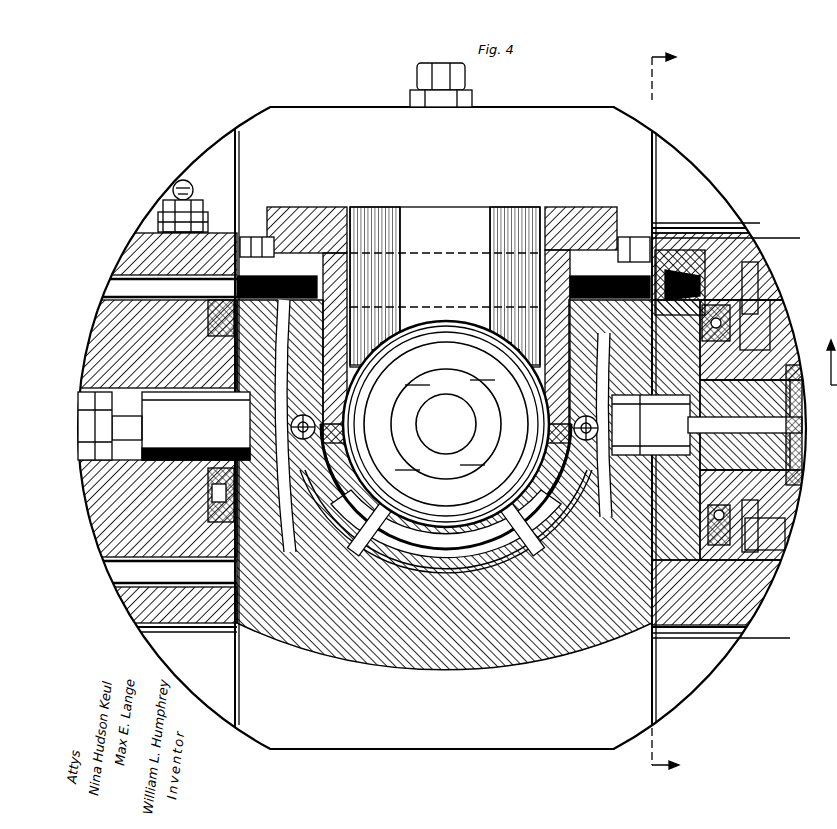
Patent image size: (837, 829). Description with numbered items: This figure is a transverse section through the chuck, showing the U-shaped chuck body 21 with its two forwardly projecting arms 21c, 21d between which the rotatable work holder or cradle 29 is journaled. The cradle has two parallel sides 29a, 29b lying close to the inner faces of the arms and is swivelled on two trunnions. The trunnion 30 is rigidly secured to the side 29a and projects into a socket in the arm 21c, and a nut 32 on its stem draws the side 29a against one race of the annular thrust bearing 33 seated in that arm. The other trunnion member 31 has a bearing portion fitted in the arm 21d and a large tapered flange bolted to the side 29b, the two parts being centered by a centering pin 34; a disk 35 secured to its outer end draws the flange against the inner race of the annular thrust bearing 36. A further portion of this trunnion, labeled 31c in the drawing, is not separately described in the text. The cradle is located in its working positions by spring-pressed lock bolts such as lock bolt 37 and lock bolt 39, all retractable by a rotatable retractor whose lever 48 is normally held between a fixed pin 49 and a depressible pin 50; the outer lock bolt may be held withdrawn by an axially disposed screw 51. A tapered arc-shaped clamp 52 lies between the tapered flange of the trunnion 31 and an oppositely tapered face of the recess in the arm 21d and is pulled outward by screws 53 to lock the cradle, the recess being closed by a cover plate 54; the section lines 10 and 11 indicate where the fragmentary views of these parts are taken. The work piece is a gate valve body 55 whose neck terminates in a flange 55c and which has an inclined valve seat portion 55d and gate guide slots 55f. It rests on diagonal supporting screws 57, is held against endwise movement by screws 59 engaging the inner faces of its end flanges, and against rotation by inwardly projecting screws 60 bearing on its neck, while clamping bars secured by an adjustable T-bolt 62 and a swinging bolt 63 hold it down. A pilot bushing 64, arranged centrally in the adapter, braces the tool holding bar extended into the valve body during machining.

The section line 10— 10 is at (678, 404).
The section line 11— 11 is at (825, 362).
The chuck body 21 is at (510, 735).
The arm of the chuck body 21c is at (112, 328).
The arm of the chuck body 21d is at (740, 600).
The work holder or cradle 29 is at (385, 672).
The side of the cradle 29a is at (270, 340).
The side of the cradle 29b is at (595, 340).
The trunnion 30 is at (181, 426).
The trunnion member 31 is at (740, 470).
The adjusting member portion 31c is at (770, 335).
The nut 32 is at (95, 400).
The annular thrust bearing 33 is at (232, 525).
The centering pin 34 is at (651, 425).
The disk 35 is at (800, 470).
The annular thrust bearing 36 is at (735, 318).
The lock bolt 37 is at (703, 522).
The lock bolt 39 is at (790, 538).
The lever 48 is at (183, 180).
The fixed pin 49 is at (205, 212).
The spring actuated or depressible pin 50 is at (160, 218).
The axially disposed screw 51 is at (824, 468).
The tapered arc-shaped clamp 52 is at (720, 230).
The screws 53 is at (770, 243).
The cover plate 54 is at (656, 235).
The valve body 55 is at (432, 240).
The flange 55c is at (560, 215).
The inclined valve seat portion 55d is at (434, 340).
The slots 55f is at (360, 250).
The supporting screws 57 is at (335, 600).
The screws 59 is at (298, 470).
The inwardly projecting screws 60 is at (290, 276).
The adjustable T-bolt 62 is at (630, 237).
The swinging bolt 63 is at (255, 237).
The pilot bushing 64 is at (420, 440).